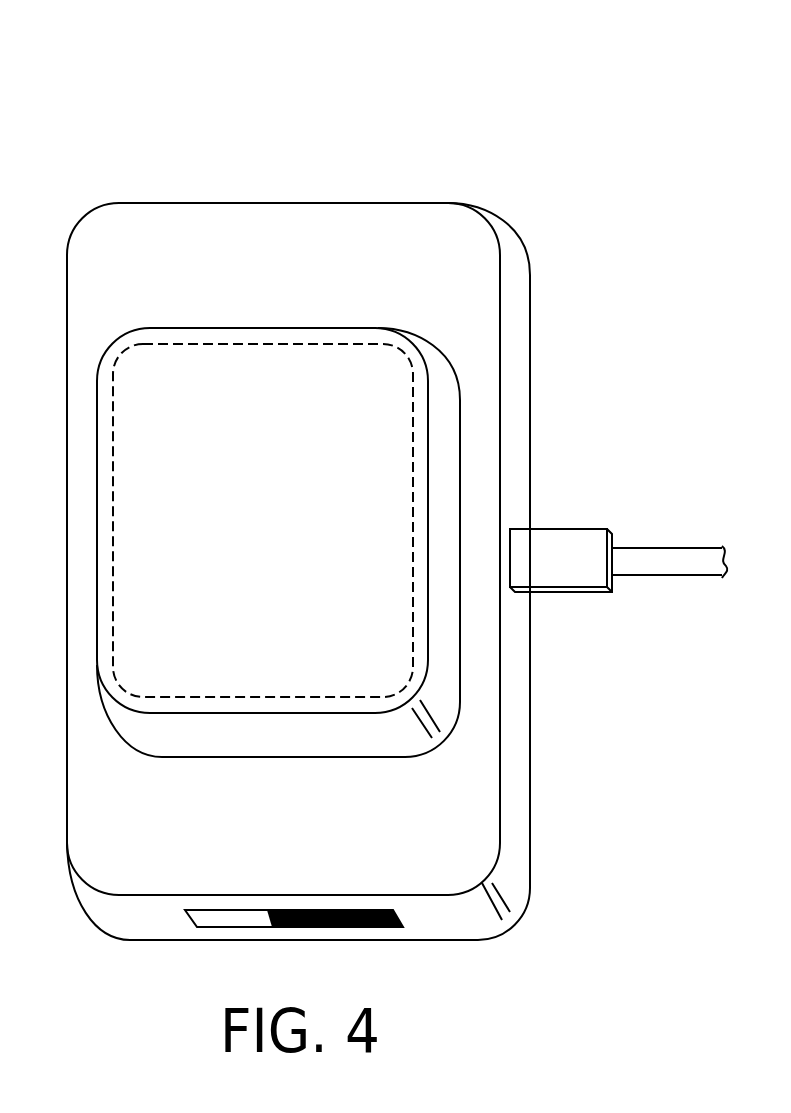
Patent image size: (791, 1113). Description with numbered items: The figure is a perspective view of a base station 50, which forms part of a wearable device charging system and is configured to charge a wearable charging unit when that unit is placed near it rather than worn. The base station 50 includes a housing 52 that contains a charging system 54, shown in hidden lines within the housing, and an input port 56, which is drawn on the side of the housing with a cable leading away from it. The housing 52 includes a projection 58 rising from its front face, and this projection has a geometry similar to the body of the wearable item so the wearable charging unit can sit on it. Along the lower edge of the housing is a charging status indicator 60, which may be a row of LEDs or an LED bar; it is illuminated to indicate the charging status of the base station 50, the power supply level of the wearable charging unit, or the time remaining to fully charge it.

The base station 50 is at (667, 103).
The housing 52 is at (267, 253).
The charging system 54 is at (167, 343).
The input port 56 is at (513, 520).
The projection 58 is at (372, 328).
The charging status indicator 60 is at (353, 927).